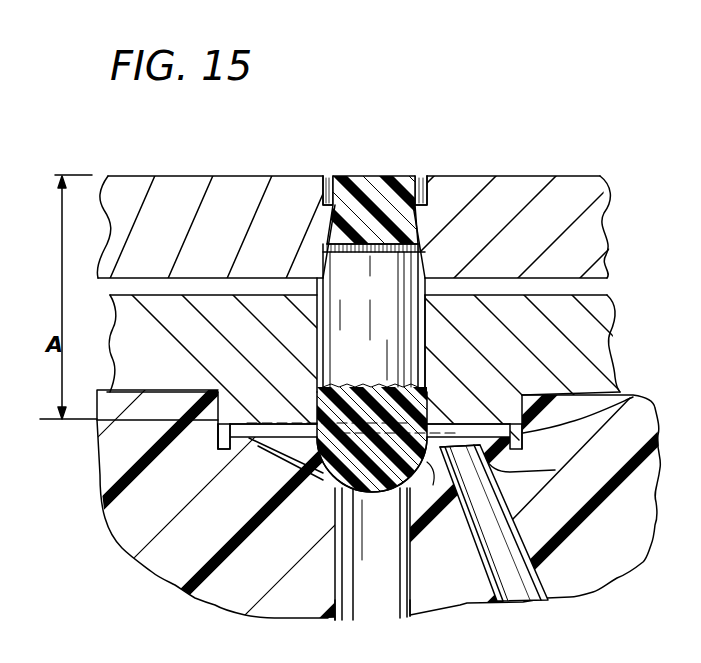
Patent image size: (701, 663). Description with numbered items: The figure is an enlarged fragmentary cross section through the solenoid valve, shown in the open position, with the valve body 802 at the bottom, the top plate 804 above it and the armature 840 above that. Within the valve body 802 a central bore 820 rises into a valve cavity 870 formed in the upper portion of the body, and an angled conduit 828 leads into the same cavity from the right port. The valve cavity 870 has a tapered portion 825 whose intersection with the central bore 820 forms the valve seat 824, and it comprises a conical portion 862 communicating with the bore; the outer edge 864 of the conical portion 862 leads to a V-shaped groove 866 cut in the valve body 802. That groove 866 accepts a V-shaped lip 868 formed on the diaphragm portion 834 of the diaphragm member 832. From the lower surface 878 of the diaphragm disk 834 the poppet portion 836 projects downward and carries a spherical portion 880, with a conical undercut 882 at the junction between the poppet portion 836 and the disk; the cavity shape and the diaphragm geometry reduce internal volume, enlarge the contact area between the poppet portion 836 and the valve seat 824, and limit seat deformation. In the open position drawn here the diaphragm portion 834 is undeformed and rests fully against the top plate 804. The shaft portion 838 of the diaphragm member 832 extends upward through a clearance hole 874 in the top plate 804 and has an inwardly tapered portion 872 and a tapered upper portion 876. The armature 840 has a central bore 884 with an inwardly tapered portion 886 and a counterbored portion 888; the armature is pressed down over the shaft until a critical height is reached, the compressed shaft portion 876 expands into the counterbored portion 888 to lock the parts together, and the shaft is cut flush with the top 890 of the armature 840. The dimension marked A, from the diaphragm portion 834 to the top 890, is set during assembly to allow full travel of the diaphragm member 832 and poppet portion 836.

The valve body 802 is at (578, 585).
The top plate 804 is at (633, 330).
The central bore 820 is at (412, 588).
The valve seat 824 is at (335, 528).
The tapered portion 825 is at (555, 470).
The angled conduit 828 is at (560, 552).
The diaphragm member 832 is at (427, 169).
The diaphragm portion 834 is at (281, 423).
The poppet portion 836 is at (312, 498).
The shaft portion 838 is at (343, 350).
The armature 840 is at (527, 175).
The conical portion 862 is at (262, 452).
The outer edge 864 is at (232, 442).
The V-shaped groove 866 is at (168, 438).
The V-shaped lip 868 is at (636, 394).
The valve cavity 870 is at (424, 516).
The inwardly tapered portion 872 is at (326, 245).
The clearance hole 874 is at (428, 314).
The upper portion of the shaft 876 is at (368, 205).
The lower surface 878 is at (505, 510).
The spherical portion 880 is at (473, 523).
The conical undercut 882 is at (443, 423).
The central bore 884 is at (323, 240).
The inwardly tapered portion 886 is at (337, 265).
The counterbored portion 888 is at (322, 190).
The top of the armature 890 is at (598, 175).